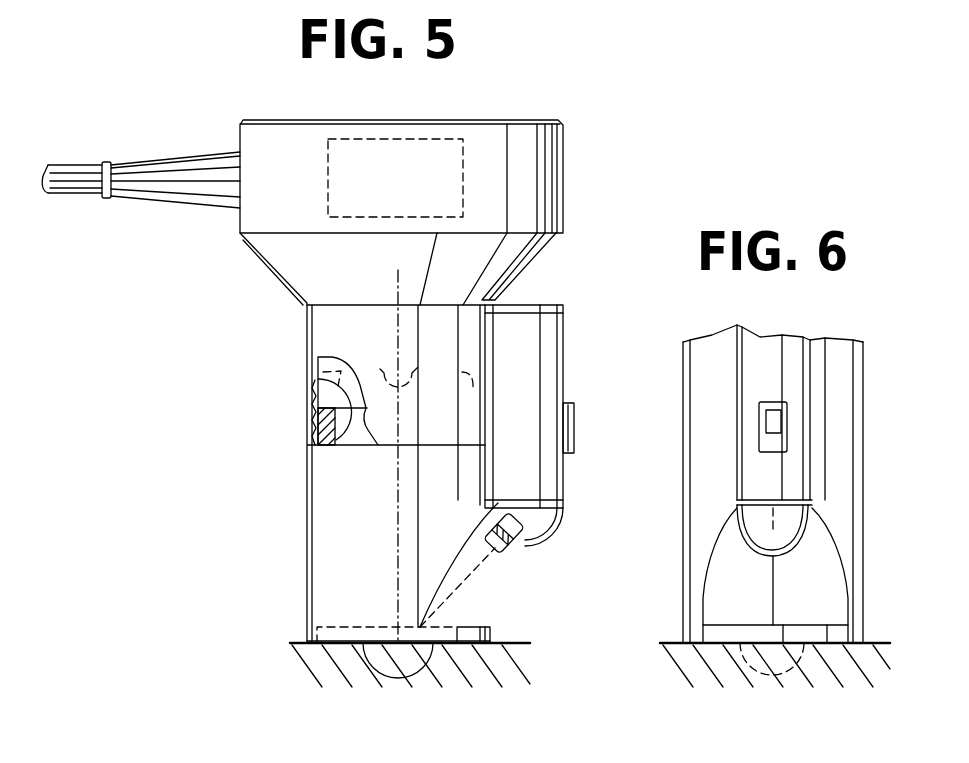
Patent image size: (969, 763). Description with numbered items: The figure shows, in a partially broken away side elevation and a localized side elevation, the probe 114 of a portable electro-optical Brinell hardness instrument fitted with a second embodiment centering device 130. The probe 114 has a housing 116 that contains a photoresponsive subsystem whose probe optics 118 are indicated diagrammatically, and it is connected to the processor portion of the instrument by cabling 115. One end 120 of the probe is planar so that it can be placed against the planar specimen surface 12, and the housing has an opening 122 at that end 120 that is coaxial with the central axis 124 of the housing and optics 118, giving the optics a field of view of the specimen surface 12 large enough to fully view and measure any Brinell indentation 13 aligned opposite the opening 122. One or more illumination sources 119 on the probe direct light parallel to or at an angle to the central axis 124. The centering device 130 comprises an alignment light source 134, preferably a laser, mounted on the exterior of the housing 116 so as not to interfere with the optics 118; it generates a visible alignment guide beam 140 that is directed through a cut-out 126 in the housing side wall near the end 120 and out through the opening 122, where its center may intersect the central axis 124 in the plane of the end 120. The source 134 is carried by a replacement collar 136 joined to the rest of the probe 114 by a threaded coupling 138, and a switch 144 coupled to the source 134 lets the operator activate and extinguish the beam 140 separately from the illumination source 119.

In FIG. 5, the specimen surface 12 is at (297, 643).
In FIG. 6, the specimen surface 12 is at (675, 643).
In FIG. 5, the Brinell indentation 13 is at (422, 665).
In FIG. 6, the Brinell indentation 13 is at (763, 664).
In FIG. 5, the probe 114 is at (566, 169).
In FIG. 5, the cabling 115 is at (182, 157).
In FIG. 5, the housing 116 is at (282, 287).
In FIG. 5, the probe optics 118 is at (447, 155).
In FIG. 5, the illumination source 119 is at (463, 372).
In FIG. 5, the probe end 120 is at (338, 643).
In FIG. 6, the probe end 120 is at (675, 643).
In FIG. 5, the opening 122 is at (462, 625).
In FIG. 6, the opening 122 is at (807, 623).
In FIG. 5, the central axis 124 is at (392, 369).
In FIG. 5, the cut-out 126 is at (440, 575).
In FIG. 6, the cut-out 126 is at (822, 561).
In FIG. 5, the centering device 130 is at (566, 461).
In FIG. 5, the alignment light source 134 is at (565, 361).
In FIG. 6, the alignment light source 134 is at (760, 355).
In FIG. 5, the collar 136 is at (307, 500).
In FIG. 6, the collar 136 is at (683, 470).
In FIG. 5, the threaded coupling 138 is at (318, 384).
In FIG. 5, the alignment guide beam 140 is at (477, 572).
In FIG. 6, the alignment guide beam 140 is at (770, 567).
In FIG. 5, the switch 144 is at (575, 414).
In FIG. 6, the switch 144 is at (787, 410).